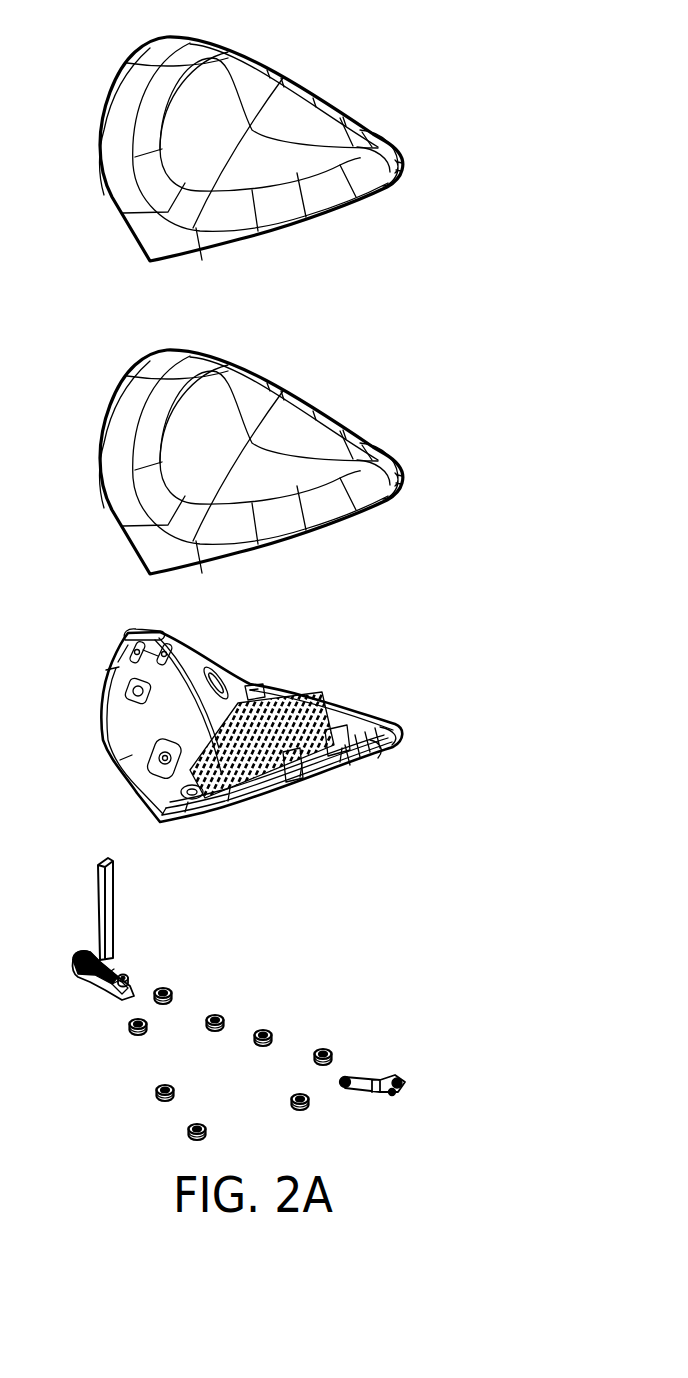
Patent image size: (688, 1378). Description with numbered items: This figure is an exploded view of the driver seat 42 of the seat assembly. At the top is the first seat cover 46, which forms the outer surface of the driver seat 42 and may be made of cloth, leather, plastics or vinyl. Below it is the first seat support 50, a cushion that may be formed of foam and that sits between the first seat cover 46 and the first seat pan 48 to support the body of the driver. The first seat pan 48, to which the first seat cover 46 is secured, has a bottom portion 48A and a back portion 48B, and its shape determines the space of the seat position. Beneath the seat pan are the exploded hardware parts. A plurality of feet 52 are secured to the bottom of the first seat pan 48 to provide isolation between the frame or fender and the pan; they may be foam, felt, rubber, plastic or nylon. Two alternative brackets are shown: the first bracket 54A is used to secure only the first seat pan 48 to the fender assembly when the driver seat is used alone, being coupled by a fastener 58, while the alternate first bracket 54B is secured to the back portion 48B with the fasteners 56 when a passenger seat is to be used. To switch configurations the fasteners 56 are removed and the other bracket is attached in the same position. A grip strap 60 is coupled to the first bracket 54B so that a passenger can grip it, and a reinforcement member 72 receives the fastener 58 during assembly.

The driver seat 42 is at (410, 75).
The first seat cover 46 is at (297, 80).
The first seat support 50 is at (270, 388).
The first seat pan 48 is at (251, 728).
The bottom portion 48A is at (280, 800).
The back portion 48B is at (150, 632).
The grip strap 60 is at (110, 915).
The reinforcement member 72 is at (73, 957).
The first bracket 54B is at (74, 999).
The fasteners 56 is at (123, 977).
The first bracket 54A is at (373, 1080).
The fastener 58 is at (346, 1077).
The feet 52 is at (172, 990).